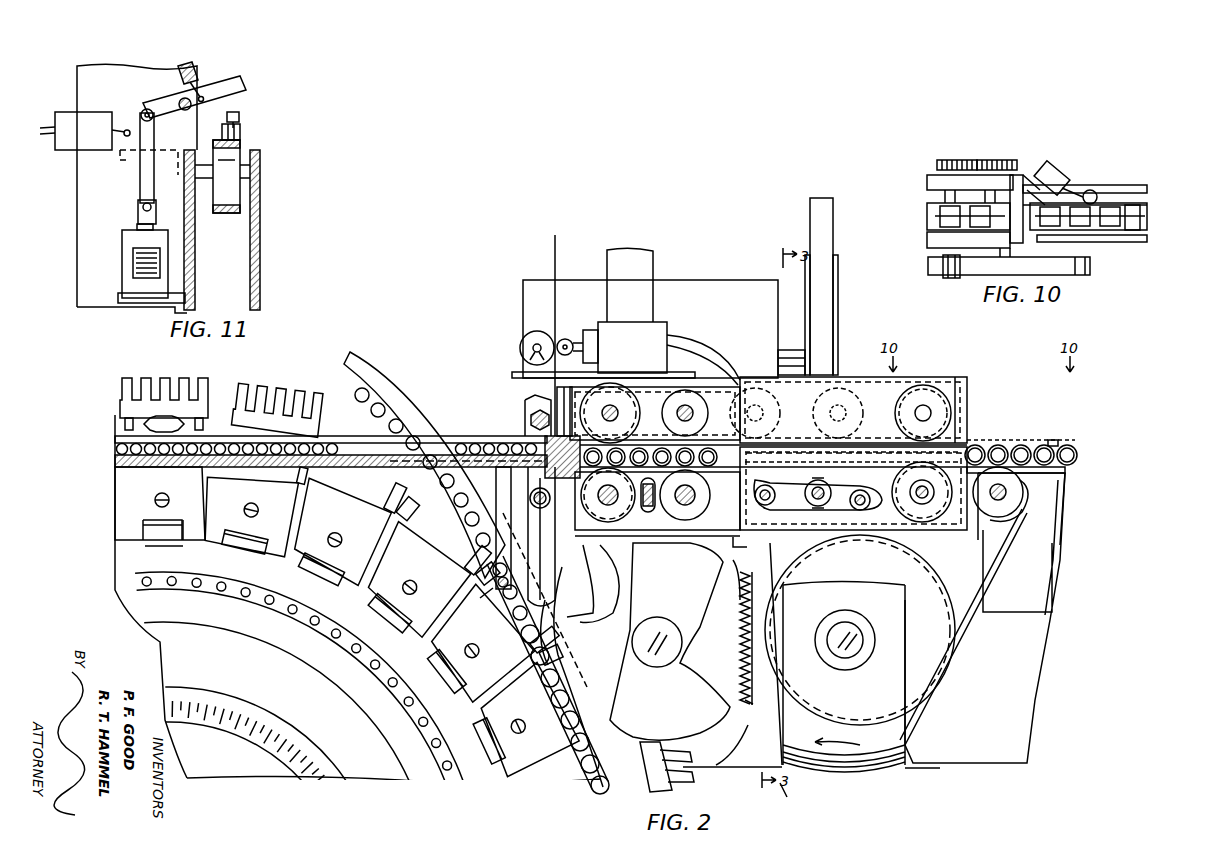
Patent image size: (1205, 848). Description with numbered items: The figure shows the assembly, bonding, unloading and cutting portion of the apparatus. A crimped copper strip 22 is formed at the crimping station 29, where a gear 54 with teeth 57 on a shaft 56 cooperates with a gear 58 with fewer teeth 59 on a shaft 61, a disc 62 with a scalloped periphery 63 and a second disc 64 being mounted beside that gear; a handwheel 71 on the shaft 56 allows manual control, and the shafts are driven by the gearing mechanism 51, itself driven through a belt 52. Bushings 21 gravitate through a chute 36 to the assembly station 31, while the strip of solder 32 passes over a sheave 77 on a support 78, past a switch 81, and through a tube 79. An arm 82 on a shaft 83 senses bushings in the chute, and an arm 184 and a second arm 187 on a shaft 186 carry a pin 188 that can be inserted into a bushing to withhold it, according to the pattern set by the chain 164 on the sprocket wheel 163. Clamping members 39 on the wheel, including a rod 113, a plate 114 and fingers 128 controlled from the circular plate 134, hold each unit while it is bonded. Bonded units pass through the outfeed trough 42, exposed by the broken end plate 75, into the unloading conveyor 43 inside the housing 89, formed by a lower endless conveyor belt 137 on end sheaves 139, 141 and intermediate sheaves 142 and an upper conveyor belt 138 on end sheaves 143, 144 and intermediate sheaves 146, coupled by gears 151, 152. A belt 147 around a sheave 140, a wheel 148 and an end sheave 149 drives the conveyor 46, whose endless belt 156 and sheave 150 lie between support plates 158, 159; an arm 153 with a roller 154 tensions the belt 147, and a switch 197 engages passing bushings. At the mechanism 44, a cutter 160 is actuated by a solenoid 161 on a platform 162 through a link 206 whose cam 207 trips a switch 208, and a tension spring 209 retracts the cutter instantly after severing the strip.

In FIG. 11, the bushings 21 is at (242, 130).
In FIG. 10, the bushings 21 is at (1112, 203).
In FIG. 2, the bushings 21 is at (350, 400).
In FIG. 11, the crimped copper strip 22 is at (242, 114).
In FIG. 10, the crimped copper strip 22 is at (1137, 232).
In FIG. 2, the crimped copper strip 22 is at (1055, 440).
In FIG. 2, the crimping station 29 is at (748, 758).
In FIG. 2, the assembly station 31 is at (539, 696).
In FIG. 2, the strip of solder 32 is at (555, 257).
In FIG. 2, the chute 36 is at (392, 372).
In FIG. 2, the clamping members 39 is at (297, 576).
In FIG. 2, the outfeed trough 42 is at (482, 436).
In FIG. 2, the unloading conveyor 43 is at (846, 367).
In FIG. 11, the mechanism 44 is at (262, 91).
In FIG. 11, the conveyor 46 is at (269, 142).
In FIG. 10, the conveyor 46 is at (1158, 260).
In FIG. 2, the conveyor 46 is at (1103, 495).
In FIG. 2, the gearing mechanism 51 is at (722, 280).
In FIG. 2, the belt 52 is at (830, 241).
In FIG. 2, the gear 54 is at (770, 575).
In FIG. 2, the shaft 56 is at (850, 625).
In FIG. 2, the teeth 57 is at (754, 638).
In FIG. 2, the gear 58 is at (734, 568).
In FIG. 2, the teeth 59 is at (747, 705).
In FIG. 2, the shaft 61 is at (658, 617).
In FIG. 2, the disc 62 is at (578, 581).
In FIG. 2, the scalloped periphery 63 is at (599, 584).
In FIG. 2, the second disc 64 is at (730, 722).
In FIG. 2, the handwheel 71 is at (880, 788).
In FIG. 2, the end plate 75 is at (525, 402).
In FIG. 2, the sheave 77 is at (520, 347).
In FIG. 2, the support 78 is at (512, 374).
In FIG. 2, the tube 79 is at (557, 395).
In FIG. 2, the switch 81 is at (658, 322).
In FIG. 2, the arm 82 is at (590, 590).
In FIG. 2, the shaft 83 is at (540, 527).
In FIG. 11, the housing 89 is at (77, 83).
In FIG. 10, the housing 89 is at (927, 180).
In FIG. 2, the housing 89 is at (967, 397).
In FIG. 2, the rod 113 is at (166, 548).
In FIG. 2, the plate 114 is at (186, 548).
In FIG. 2, the fingers 128 is at (278, 395).
In FIG. 2, the circular plate 134 is at (222, 402).
In FIG. 2, the endless conveyor belt 137 is at (675, 543).
In FIG. 10, the upper conveyor belt 138 is at (927, 215).
In FIG. 2, the upper conveyor belt 138 is at (660, 387).
In FIG. 2, the end sheave 139 is at (564, 457).
In FIG. 10, the sheave 140 is at (950, 279).
In FIG. 2, the sheave 140 is at (912, 500).
In FIG. 2, the end sheave 141 is at (924, 498).
In FIG. 2, the intermediate sheaves 142 is at (712, 500).
In FIG. 2, the end sheave 143 is at (644, 413).
In FIG. 10, the end sheave 144 is at (932, 200).
In FIG. 2, the end sheave 144 is at (932, 385).
In FIG. 2, the intermediate sheaves 146 is at (830, 409).
In FIG. 2, the belt 147 is at (968, 625).
In FIG. 2, the wheel 148 is at (938, 600).
In FIG. 10, the end sheave 149 is at (1080, 276).
In FIG. 2, the end sheave 149 is at (1033, 492).
In FIG. 10, the sheave 150 is at (1083, 190).
In FIG. 2, the sheave 150 is at (1000, 508).
In FIG. 10, the gear 151 is at (950, 160).
In FIG. 10, the gear 152 is at (1003, 160).
In FIG. 2, the arm 153 is at (755, 488).
In FIG. 2, the roller 154 is at (878, 483).
In FIG. 11, the endless belt 156 is at (225, 214).
In FIG. 10, the endless belt 156 is at (1140, 206).
In FIG. 2, the endless belt 156 is at (1065, 470).
In FIG. 11, the support plate 158 is at (260, 251).
In FIG. 10, the support plate 158 is at (1147, 240).
In FIG. 11, the support plate 159 is at (195, 253).
In FIG. 10, the support plate 159 is at (1147, 186).
In FIG. 11, the cutter 160 is at (216, 90).
In FIG. 11, the solenoid 161 is at (133, 253).
In FIG. 11, the platform 162 is at (138, 306).
In FIG. 2, the sprocket wheel 163 is at (285, 620).
In FIG. 2, the chain 164 is at (240, 592).
In FIG. 2, the arm 184 is at (656, 491).
In FIG. 2, the shaft 186 is at (543, 513).
In FIG. 2, the second arm 187 is at (503, 478).
In FIG. 2, the pin 188 is at (474, 599).
In FIG. 10, the single-pole double throw switch 197 is at (1048, 165).
In FIG. 2, the single-pole double throw switch 197 is at (988, 440).
In FIG. 11, the link 206 is at (142, 115).
In FIG. 11, the cam 207 is at (140, 165).
In FIG. 11, the switch 208 is at (75, 115).
In FIG. 11, the tension spring 209 is at (180, 70).